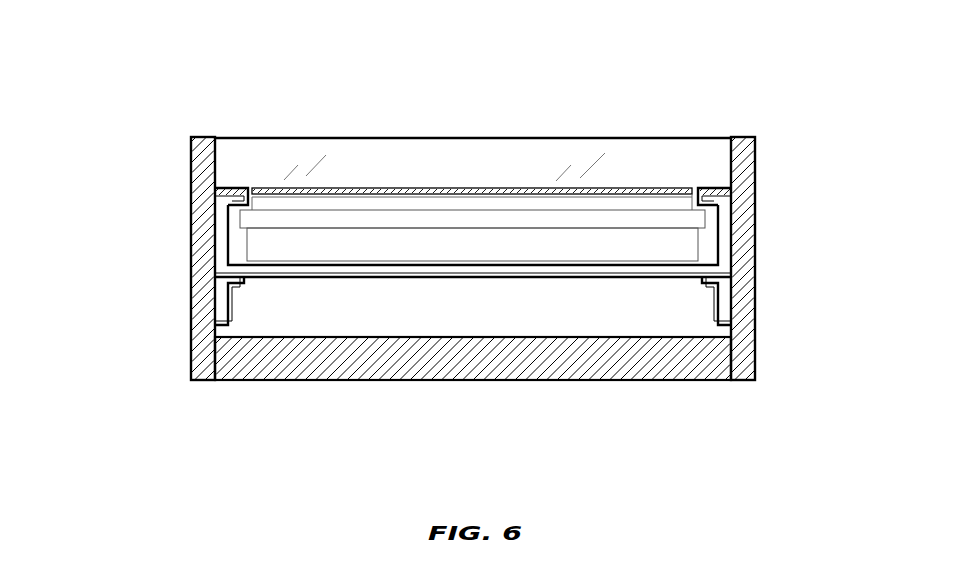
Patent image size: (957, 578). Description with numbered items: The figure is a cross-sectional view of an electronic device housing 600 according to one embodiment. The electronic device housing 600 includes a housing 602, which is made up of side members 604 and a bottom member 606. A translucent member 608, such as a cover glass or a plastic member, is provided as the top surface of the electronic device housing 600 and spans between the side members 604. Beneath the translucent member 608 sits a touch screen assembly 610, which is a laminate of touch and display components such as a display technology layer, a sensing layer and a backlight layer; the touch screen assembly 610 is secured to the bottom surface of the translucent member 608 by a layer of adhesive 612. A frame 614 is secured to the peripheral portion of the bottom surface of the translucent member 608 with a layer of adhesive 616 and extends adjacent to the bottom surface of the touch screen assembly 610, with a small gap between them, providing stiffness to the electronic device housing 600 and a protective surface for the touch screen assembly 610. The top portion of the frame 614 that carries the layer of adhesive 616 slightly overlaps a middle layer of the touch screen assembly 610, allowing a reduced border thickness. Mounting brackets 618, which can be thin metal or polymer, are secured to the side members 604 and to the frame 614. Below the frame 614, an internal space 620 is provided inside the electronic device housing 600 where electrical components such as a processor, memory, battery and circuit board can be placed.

The electronic device housing 600 is at (131, 77).
The housing 602 is at (144, 382).
The side members 604 is at (195, 292).
The bottom member 606 is at (363, 381).
The translucent member 608 is at (491, 173).
The touch screen assembly 610 is at (472, 233).
The layer of adhesive 612 is at (530, 188).
The frame 614 is at (225, 225).
The layer of adhesive 616 is at (215, 190).
The mounting brackets 618 is at (244, 283).
The internal space 620 is at (491, 315).